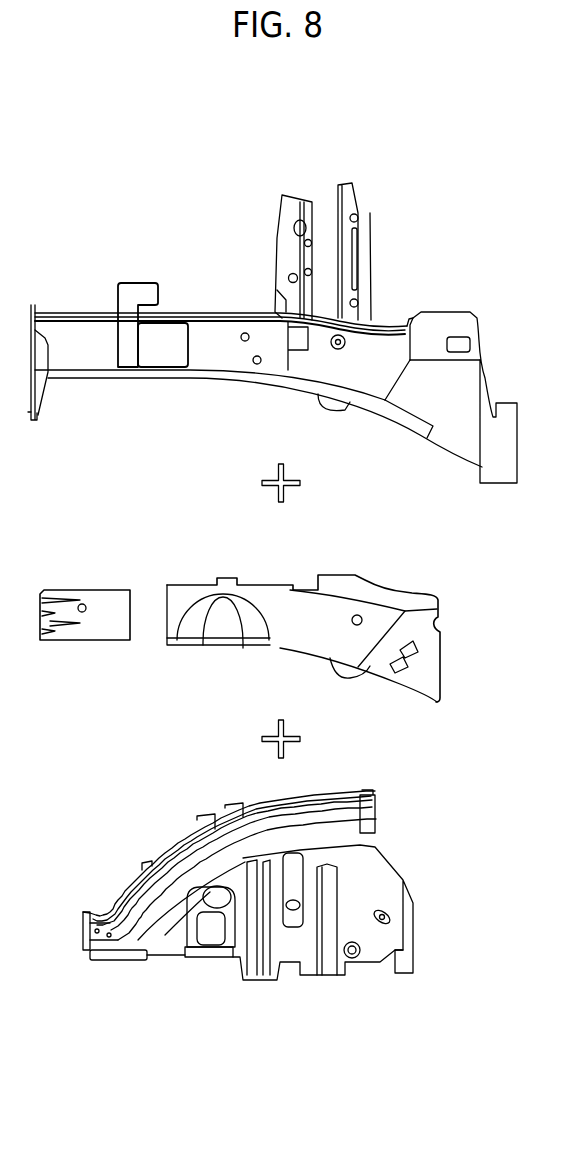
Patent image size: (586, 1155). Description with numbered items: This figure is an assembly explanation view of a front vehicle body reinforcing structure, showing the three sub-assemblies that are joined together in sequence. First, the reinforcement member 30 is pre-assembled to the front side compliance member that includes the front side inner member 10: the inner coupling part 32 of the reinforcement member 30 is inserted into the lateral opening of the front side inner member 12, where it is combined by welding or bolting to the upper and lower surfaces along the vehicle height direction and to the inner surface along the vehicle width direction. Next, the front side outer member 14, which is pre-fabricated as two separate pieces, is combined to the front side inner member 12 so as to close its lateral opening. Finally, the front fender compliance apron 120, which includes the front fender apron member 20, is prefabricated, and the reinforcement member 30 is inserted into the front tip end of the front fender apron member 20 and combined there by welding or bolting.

The front side inner member 10 is at (428, 286).
The front side inner member 12 is at (222, 312).
The front side outer member 14 is at (86, 590).
The front fender apron member 20 is at (127, 878).
The reinforcement member 30 is at (115, 271).
The inner coupling part 32 is at (170, 323).
The front fender compliance apron 120 is at (430, 826).